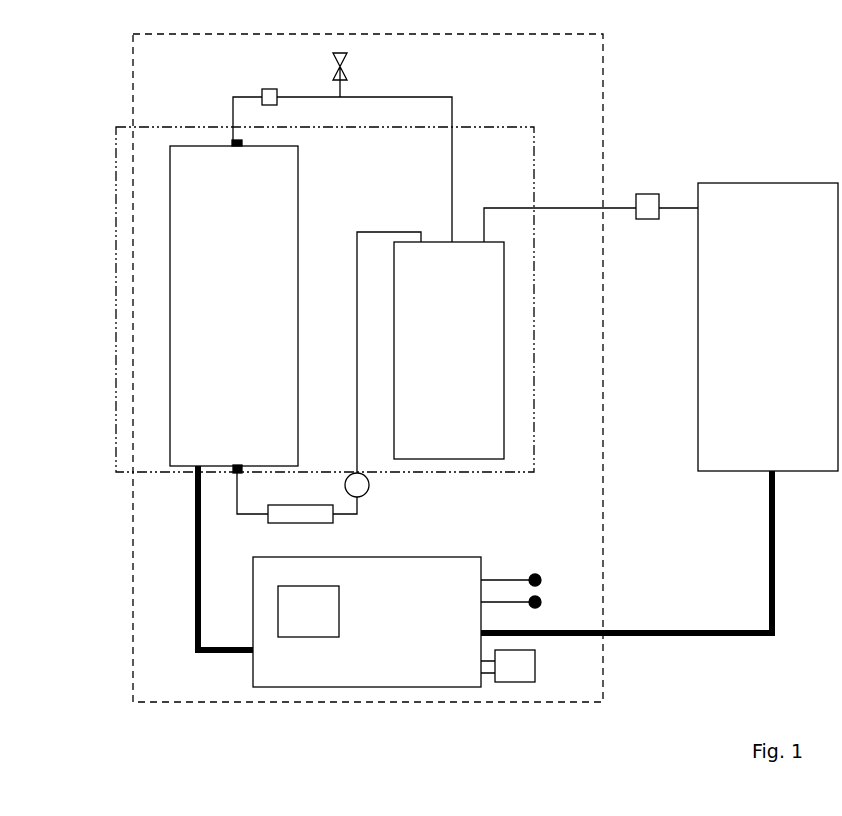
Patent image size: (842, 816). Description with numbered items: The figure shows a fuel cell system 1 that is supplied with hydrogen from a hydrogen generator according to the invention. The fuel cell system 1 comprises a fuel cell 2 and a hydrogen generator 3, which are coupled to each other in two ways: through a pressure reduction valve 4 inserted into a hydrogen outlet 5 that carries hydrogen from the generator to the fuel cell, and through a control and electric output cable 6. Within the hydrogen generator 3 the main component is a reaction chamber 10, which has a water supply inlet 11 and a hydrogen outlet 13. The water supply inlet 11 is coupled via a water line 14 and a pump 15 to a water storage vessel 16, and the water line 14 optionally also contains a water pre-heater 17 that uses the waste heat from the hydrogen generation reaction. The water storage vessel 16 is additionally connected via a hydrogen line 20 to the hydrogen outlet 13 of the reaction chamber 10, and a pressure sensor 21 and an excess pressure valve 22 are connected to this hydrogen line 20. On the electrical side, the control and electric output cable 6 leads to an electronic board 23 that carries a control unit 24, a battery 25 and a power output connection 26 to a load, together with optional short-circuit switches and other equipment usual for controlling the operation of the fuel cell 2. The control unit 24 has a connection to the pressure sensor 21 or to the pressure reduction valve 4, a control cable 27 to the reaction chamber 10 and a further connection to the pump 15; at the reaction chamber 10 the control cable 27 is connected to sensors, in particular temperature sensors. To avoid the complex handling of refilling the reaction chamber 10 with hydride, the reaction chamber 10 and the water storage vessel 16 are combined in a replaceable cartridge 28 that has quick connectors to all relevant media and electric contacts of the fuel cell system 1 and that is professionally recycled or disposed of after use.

The fuel cell system 1 is at (772, 90).
The fuel cell 2 is at (770, 183).
The hydrogen generator 3 is at (133, 65).
The pressure reduction valve 4 is at (645, 194).
The hydrogen outlet 5 is at (484, 208).
The control and electric output cable 6 is at (660, 633).
The reaction chamber 10 is at (298, 193).
The water supply inlet 11 is at (237, 473).
The hydrogen outlet 13 is at (241, 143).
The water line 14 is at (372, 232).
The pump 15 is at (369, 485).
The water storage vessel 16 is at (504, 314).
The water pre-heater 17 is at (270, 505).
The hydrogen line 20 is at (420, 97).
The pressure sensor 21 is at (262, 92).
The excess pressure valve 22 is at (333, 76).
The electronic board 23 is at (372, 557).
The control unit 24 is at (278, 609).
The battery 25 is at (535, 666).
The power output connection 26 is at (538, 590).
The control cable 27 is at (198, 596).
The replaceable cartridge 28 is at (116, 229).